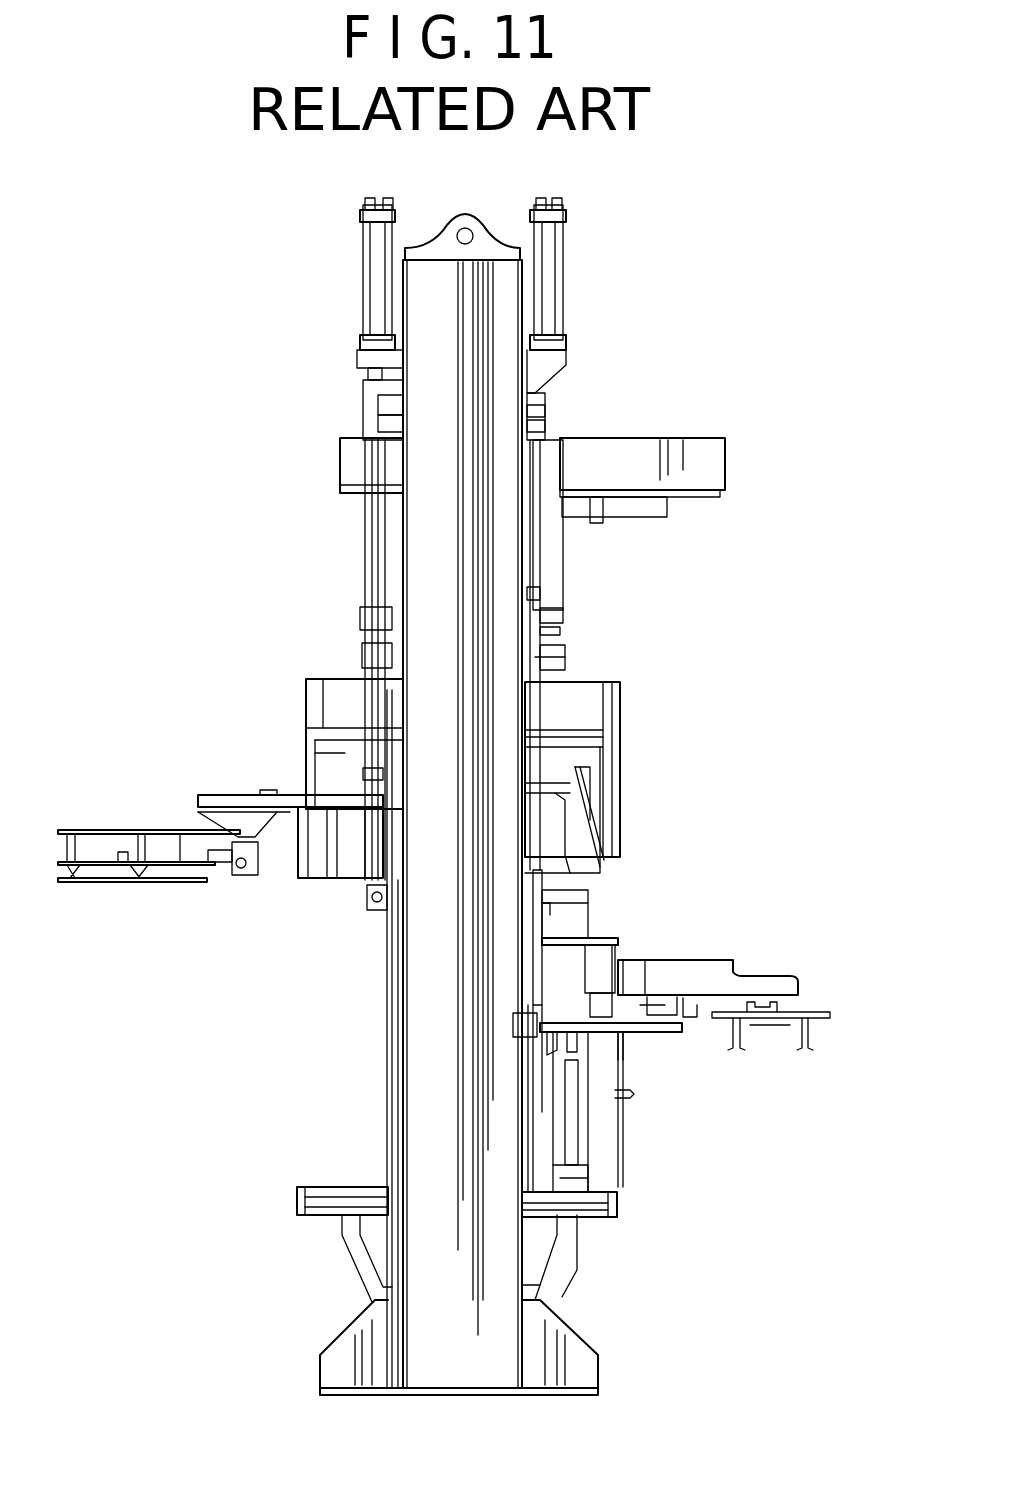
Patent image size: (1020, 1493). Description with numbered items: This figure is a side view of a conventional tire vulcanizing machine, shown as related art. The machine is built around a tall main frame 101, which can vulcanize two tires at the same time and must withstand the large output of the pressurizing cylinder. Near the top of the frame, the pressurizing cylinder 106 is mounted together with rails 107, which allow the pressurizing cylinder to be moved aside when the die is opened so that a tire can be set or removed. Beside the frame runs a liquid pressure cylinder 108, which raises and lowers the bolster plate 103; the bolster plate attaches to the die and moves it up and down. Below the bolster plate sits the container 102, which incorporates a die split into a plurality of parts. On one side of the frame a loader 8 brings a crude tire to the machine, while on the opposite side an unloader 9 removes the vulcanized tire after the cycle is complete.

The loader 8 is at (212, 878).
The unloader 9 is at (686, 943).
The main frame 101 is at (435, 1040).
The container 102 is at (620, 805).
The bolster plate 103 is at (580, 700).
The pressurizing cylinder 106 is at (635, 517).
The rails 107 is at (700, 497).
The liquid pressure cylinder 108 is at (365, 290).